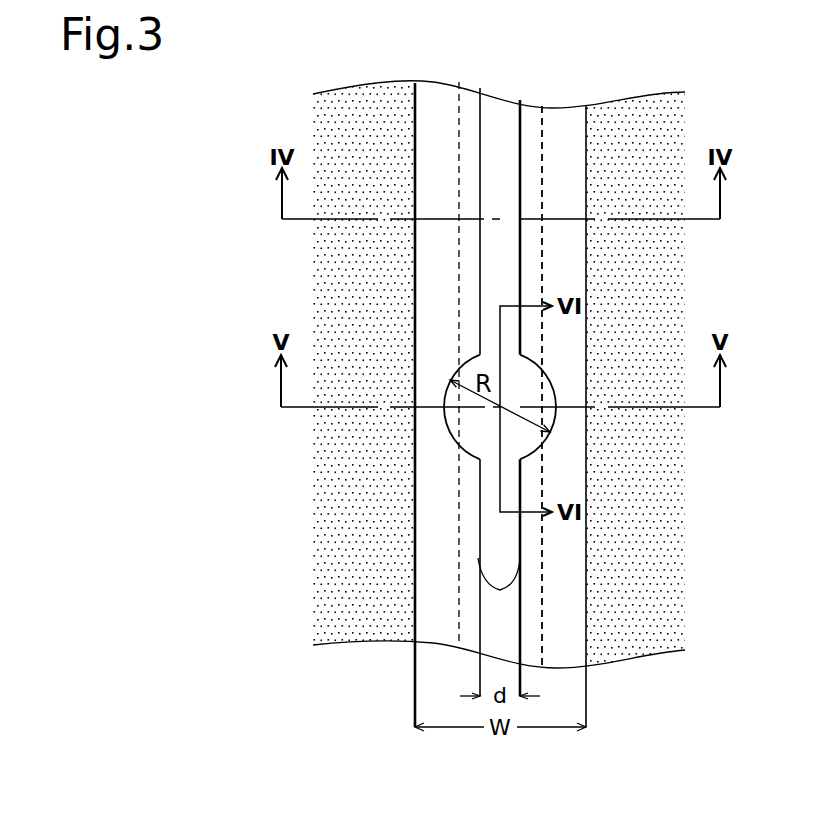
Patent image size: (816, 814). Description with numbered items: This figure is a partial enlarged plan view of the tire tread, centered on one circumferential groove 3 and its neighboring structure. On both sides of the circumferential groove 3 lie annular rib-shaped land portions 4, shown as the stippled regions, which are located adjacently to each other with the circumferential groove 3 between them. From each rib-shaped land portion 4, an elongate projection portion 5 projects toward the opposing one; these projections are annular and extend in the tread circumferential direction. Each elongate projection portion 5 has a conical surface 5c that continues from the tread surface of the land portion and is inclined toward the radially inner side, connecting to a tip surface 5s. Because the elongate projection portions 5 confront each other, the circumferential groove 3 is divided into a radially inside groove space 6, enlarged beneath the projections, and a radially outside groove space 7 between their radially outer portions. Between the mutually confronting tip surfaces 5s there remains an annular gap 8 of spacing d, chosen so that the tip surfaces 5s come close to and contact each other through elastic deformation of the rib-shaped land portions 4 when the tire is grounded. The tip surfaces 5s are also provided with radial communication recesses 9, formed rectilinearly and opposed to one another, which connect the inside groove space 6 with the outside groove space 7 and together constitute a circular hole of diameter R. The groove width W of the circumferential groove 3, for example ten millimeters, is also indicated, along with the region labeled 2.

The electrode body 2 is at (385, 73).
The circumferential groove 3 is at (500, 88).
The rib-shaped land portion 4 is at (350, 108).
The elongate projection portion 5 is at (440, 107).
The conical surface 5c is at (562, 125).
The tip surface 5s is at (499, 590).
The radially inside groove space 6 is at (475, 538).
The radially outside groove space 7 is at (450, 275).
The annular gap 8 is at (507, 281).
The communication recess 9 is at (480, 418).